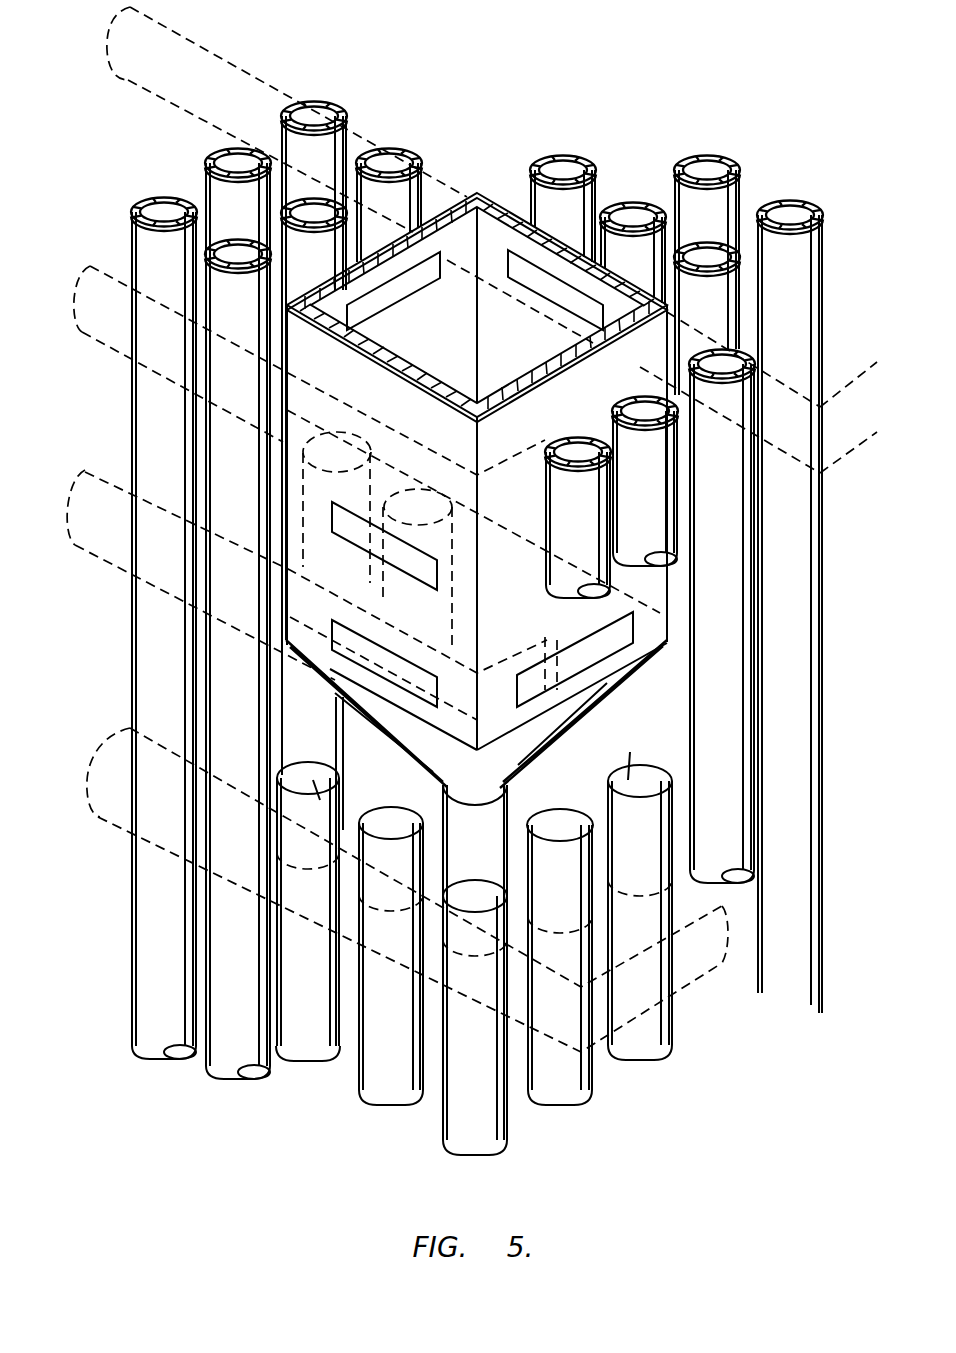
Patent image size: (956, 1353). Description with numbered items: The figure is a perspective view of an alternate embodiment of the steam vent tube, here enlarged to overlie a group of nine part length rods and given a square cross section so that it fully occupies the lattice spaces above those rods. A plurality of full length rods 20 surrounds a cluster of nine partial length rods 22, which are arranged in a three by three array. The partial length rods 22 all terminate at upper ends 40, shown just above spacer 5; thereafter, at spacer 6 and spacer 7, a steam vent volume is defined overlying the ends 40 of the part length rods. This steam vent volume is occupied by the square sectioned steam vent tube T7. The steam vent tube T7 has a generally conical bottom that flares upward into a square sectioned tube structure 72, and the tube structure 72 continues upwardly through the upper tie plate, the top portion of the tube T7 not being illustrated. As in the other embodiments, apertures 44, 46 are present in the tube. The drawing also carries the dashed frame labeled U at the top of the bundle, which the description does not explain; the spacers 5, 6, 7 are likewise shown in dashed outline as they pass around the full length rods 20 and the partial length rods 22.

The full length rods 20 is at (152, 746).
The partial length rods 22 is at (296, 1030).
The square sectioned tube structure 72 is at (389, 421).
The aperture 44 is at (388, 650).
The aperture 46 is at (354, 546).
The upper ends 40 is at (378, 825).
The spacer 5 is at (90, 780).
The spacer 6 is at (78, 516).
The spacer 7 is at (82, 316).
The top beam U is at (114, 93).
The square section steam vent tube T7 is at (451, 198).